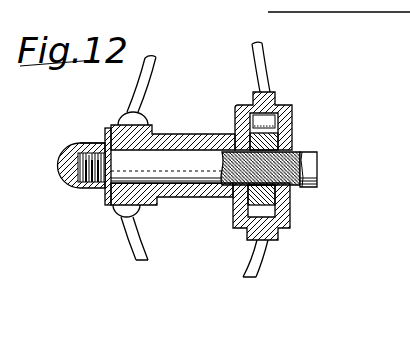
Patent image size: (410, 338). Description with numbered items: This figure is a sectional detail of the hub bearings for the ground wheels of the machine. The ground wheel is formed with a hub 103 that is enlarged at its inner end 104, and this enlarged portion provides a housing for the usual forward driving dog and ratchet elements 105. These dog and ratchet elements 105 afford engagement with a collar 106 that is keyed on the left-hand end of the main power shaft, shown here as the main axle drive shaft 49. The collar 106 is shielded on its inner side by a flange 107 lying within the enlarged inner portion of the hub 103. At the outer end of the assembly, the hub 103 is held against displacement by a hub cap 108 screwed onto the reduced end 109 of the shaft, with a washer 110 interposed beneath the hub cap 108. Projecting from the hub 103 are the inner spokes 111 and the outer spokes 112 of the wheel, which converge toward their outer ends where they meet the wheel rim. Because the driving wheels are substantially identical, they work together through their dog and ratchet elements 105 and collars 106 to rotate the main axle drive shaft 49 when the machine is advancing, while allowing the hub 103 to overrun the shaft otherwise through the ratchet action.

The main axle drive shaft 49 is at (313, 165).
The hub 103 is at (184, 136).
The enlarged inner end 104 is at (282, 103).
The driving dog and ratchet elements 105 is at (268, 119).
The collar 106 is at (293, 137).
The flange 107 is at (290, 215).
The hub cap 108 is at (82, 190).
The reduced end of the shaft 109 is at (90, 143).
The washer 110 is at (107, 128).
The inner spokes 111 is at (270, 62).
The outer spokes 112 is at (150, 72).